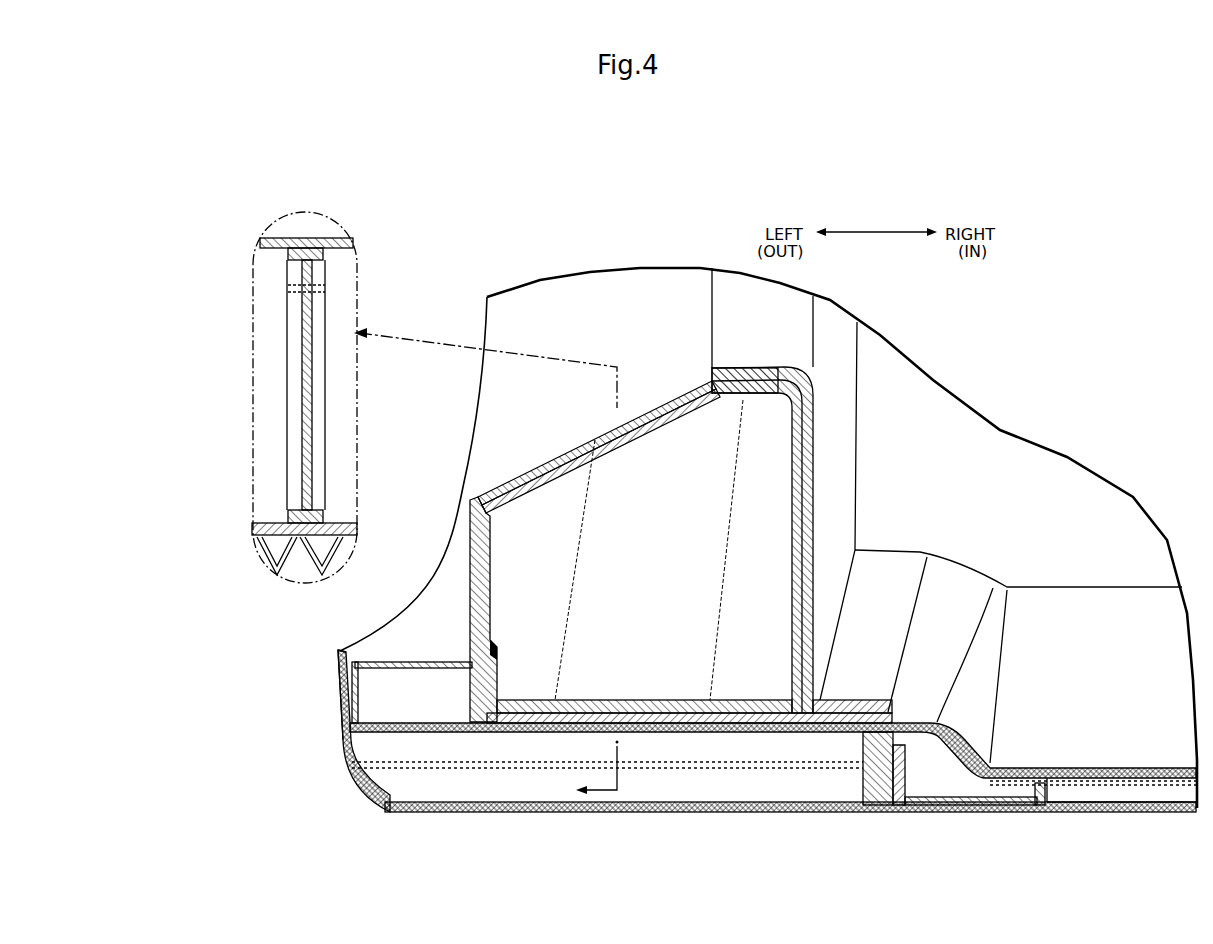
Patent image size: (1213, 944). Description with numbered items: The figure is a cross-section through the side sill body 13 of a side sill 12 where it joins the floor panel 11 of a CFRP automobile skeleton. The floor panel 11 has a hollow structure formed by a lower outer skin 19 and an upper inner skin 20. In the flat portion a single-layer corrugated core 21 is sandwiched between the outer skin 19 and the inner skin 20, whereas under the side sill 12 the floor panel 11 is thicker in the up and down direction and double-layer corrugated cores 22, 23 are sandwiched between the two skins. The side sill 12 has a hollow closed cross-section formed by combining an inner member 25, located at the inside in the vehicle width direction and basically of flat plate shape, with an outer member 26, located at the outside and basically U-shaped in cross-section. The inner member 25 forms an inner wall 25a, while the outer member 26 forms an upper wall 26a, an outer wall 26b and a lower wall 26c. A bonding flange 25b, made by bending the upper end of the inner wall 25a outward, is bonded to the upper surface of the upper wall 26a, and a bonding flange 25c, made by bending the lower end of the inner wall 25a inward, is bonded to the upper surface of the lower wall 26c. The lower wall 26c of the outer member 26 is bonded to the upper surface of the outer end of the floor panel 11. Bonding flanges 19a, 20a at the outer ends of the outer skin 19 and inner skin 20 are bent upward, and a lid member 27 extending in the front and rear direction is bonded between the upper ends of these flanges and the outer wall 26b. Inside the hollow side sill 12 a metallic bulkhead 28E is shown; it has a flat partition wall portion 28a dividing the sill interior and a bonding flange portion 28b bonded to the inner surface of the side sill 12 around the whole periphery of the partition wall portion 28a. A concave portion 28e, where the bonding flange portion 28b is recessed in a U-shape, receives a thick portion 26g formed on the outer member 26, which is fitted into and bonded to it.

The floor panel 11 is at (1108, 762).
The side sill 12 is at (632, 392).
The side sill body 13 is at (520, 459).
The outer skin 19 is at (1128, 815).
The bonding flange 19a is at (336, 673).
The inner skin 20 is at (338, 522).
The bonding flange 20a is at (347, 649).
The corrugated core 21 is at (1090, 790).
The corrugated core 22 is at (270, 565).
The corrugated core 23 is at (303, 585).
The inner member 25 is at (815, 451).
The inner wall 25a is at (815, 487).
The bonding flange 25b is at (743, 372).
The bonding flange 25c is at (857, 700).
The outer member 26 is at (321, 233).
The upper wall 26a is at (278, 236).
The outer wall 26b is at (262, 526).
The lower wall 26c is at (690, 725).
The thick portion 26g is at (465, 492).
The lid member 27 is at (413, 660).
The partition wall portion 28a is at (300, 375).
The bonding flange portion 28b is at (318, 262).
The concave portion 28e is at (518, 493).
The bulkhead 28E is at (325, 391).